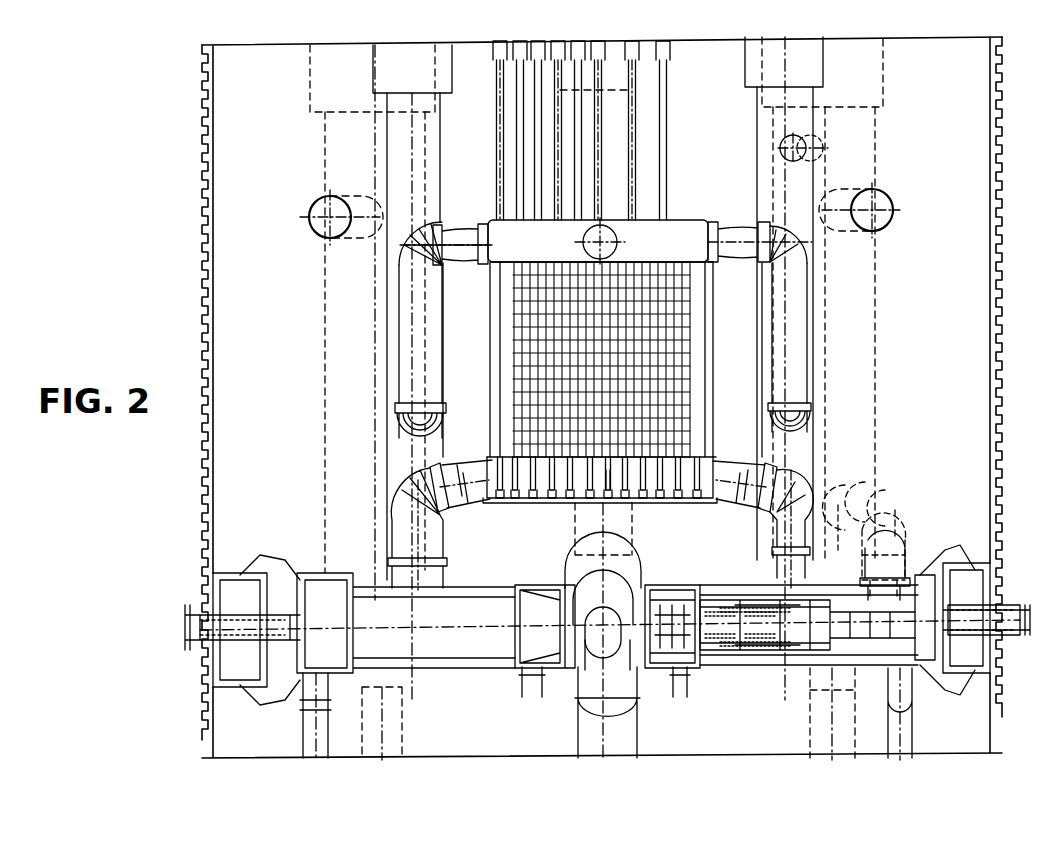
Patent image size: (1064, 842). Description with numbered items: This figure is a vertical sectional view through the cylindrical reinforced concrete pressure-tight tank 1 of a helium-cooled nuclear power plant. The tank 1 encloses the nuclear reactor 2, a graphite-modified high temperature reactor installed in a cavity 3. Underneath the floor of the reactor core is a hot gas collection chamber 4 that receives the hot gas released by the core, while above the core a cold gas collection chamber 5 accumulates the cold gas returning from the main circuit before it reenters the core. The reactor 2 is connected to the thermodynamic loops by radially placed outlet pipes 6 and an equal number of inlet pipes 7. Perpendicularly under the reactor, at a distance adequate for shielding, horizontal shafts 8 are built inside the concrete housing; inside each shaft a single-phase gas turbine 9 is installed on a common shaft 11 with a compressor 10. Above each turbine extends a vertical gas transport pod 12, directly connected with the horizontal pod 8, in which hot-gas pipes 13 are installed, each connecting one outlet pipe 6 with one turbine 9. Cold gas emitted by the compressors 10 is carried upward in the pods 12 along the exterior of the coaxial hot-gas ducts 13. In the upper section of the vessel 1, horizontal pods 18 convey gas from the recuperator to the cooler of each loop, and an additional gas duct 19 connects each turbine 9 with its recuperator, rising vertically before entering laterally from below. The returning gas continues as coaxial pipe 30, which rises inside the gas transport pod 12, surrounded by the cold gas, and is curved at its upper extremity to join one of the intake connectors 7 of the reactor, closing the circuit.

The pressure-tight tank 1 is at (945, 134).
The nuclear reactor 2 is at (662, 352).
The cavity 3 is at (713, 297).
The hot gas collection chamber 4 is at (665, 470).
The cold gas collection chamber 5 is at (662, 238).
The outlet pipes 6 is at (476, 490).
The inlet pipes 7 is at (459, 240).
The horizontal shafts 8 is at (492, 665).
The gas turbine 9 is at (787, 632).
The compressor 10 is at (553, 650).
The common shaft 11 is at (930, 620).
The vertical gas transport pod 12 is at (398, 379).
The hot-gas pipes 13 is at (415, 538).
The horizontal pods 18 is at (318, 228).
The gas duct 19 is at (893, 517).
The coaxial pipe 30 is at (410, 328).